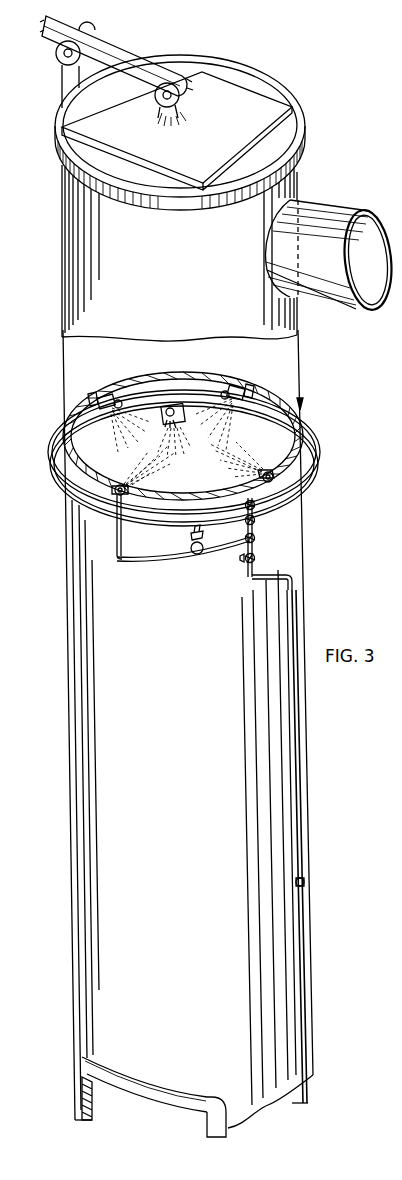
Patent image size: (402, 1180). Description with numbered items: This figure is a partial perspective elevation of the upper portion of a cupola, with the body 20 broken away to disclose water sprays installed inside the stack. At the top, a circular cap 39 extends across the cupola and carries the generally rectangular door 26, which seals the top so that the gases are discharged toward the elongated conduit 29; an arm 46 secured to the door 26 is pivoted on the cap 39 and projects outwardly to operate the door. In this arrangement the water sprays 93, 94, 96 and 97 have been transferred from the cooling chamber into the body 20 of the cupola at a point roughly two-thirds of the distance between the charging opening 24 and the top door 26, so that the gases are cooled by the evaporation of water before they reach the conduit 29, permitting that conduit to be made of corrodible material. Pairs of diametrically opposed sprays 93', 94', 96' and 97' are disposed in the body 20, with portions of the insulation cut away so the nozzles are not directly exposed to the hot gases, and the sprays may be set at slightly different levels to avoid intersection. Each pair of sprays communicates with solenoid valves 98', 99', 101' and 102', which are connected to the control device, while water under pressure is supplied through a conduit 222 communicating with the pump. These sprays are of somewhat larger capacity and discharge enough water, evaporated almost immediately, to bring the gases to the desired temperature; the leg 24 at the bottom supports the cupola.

The cupola body 20 is at (92, 673).
The charging opening 24 is at (102, 1108).
The door 26 is at (260, 108).
The elongated conduit 29 is at (335, 232).
The circular cap 39 is at (277, 140).
The arm 46 is at (135, 60).
The water spray 93 is at (111, 402).
The water spray 93' is at (242, 456).
The water spray 94 is at (180, 449).
The water spray 94' is at (204, 464).
The water spray 96 is at (193, 404).
The water spray 96' is at (183, 562).
The water spray 97 is at (144, 502).
The water spray 97' is at (264, 399).
The solenoid valve 98' is at (296, 537).
The solenoid valve 99' is at (296, 543).
The solenoid valve 101' is at (302, 561).
The solenoid valve 102' is at (301, 580).
The conduit 222 is at (297, 790).